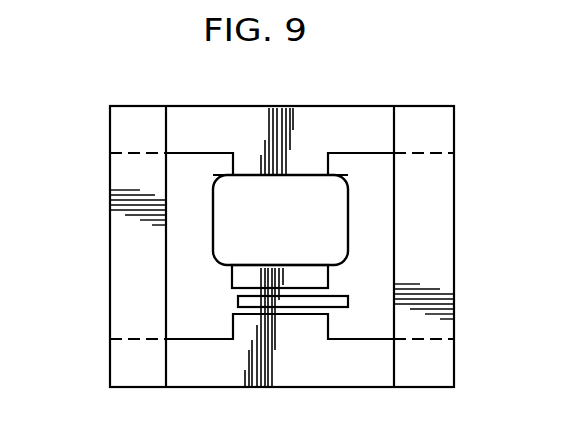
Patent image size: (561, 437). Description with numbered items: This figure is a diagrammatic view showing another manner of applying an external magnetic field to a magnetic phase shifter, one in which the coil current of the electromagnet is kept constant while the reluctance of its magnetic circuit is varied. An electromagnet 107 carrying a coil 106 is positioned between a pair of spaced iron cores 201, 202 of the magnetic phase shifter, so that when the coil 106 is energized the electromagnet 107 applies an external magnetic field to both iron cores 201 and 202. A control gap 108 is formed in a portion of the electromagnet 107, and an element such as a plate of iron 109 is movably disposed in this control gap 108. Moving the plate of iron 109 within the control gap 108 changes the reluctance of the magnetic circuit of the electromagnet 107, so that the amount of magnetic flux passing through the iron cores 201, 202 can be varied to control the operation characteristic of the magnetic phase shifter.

The coil 106 is at (374, 203).
The electromagnet 107 is at (296, 120).
The control gap 108 is at (242, 311).
The plate of iron 109 is at (340, 293).
The iron core 201 is at (110, 265).
The iron core 202 is at (455, 283).